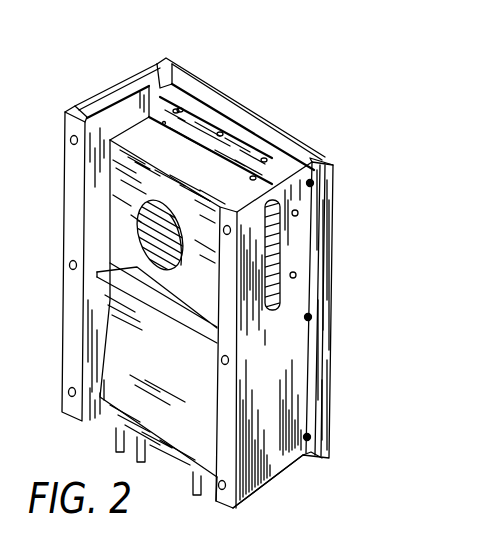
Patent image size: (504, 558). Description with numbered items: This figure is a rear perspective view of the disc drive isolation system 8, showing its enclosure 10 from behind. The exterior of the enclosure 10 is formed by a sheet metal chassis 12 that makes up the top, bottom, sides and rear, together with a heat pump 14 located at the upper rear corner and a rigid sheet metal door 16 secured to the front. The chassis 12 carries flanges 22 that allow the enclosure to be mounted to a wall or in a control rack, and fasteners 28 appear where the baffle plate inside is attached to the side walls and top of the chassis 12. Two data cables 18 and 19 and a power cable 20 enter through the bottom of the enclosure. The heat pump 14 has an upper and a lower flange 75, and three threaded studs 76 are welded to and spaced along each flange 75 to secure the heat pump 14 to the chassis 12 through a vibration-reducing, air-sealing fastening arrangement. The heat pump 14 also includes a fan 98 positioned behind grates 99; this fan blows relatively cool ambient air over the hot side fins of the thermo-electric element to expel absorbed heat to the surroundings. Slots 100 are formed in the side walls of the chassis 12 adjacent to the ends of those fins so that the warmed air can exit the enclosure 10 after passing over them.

The disc drive isolation system 8 is at (117, 76).
The enclosure 10 is at (122, 96).
The sheet metal chassis 12 is at (314, 160).
The heat pump 14 is at (137, 267).
The rigid sheet metal door 16 is at (260, 121).
The data cable 18 is at (137, 457).
The data cable 19 is at (117, 433).
The power cable 20 is at (193, 490).
The flanges 22 is at (233, 462).
The fasteners 28 is at (222, 132).
The flange 75 is at (178, 109).
The threaded studs 76 is at (211, 153).
The fan 98 is at (142, 223).
The grates 99 is at (183, 249).
The slots 100 is at (275, 296).